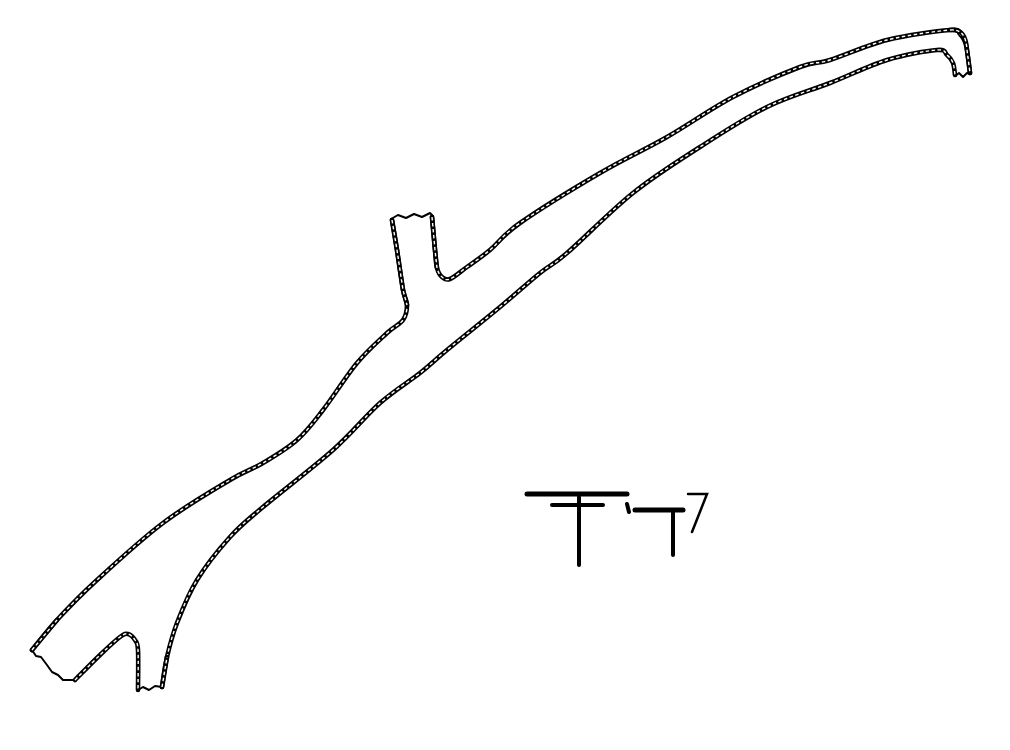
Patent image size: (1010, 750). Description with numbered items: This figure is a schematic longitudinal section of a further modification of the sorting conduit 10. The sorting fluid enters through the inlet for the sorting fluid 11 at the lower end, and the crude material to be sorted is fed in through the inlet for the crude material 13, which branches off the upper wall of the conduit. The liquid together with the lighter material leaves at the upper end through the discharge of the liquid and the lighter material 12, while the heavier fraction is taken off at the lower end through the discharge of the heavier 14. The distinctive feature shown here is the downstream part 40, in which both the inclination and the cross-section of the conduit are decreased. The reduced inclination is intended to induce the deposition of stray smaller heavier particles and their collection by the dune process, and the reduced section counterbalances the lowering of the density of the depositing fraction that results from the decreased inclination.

The sorting conduit 10 is at (517, 227).
The inlet for the sorting fluid 11 is at (58, 642).
The discharge of the liquid and the lighter material 12 is at (963, 40).
The inlet for the crude material 13 is at (392, 242).
The discharge of the heavier 14 is at (155, 664).
The downstream part 40 is at (847, 68).